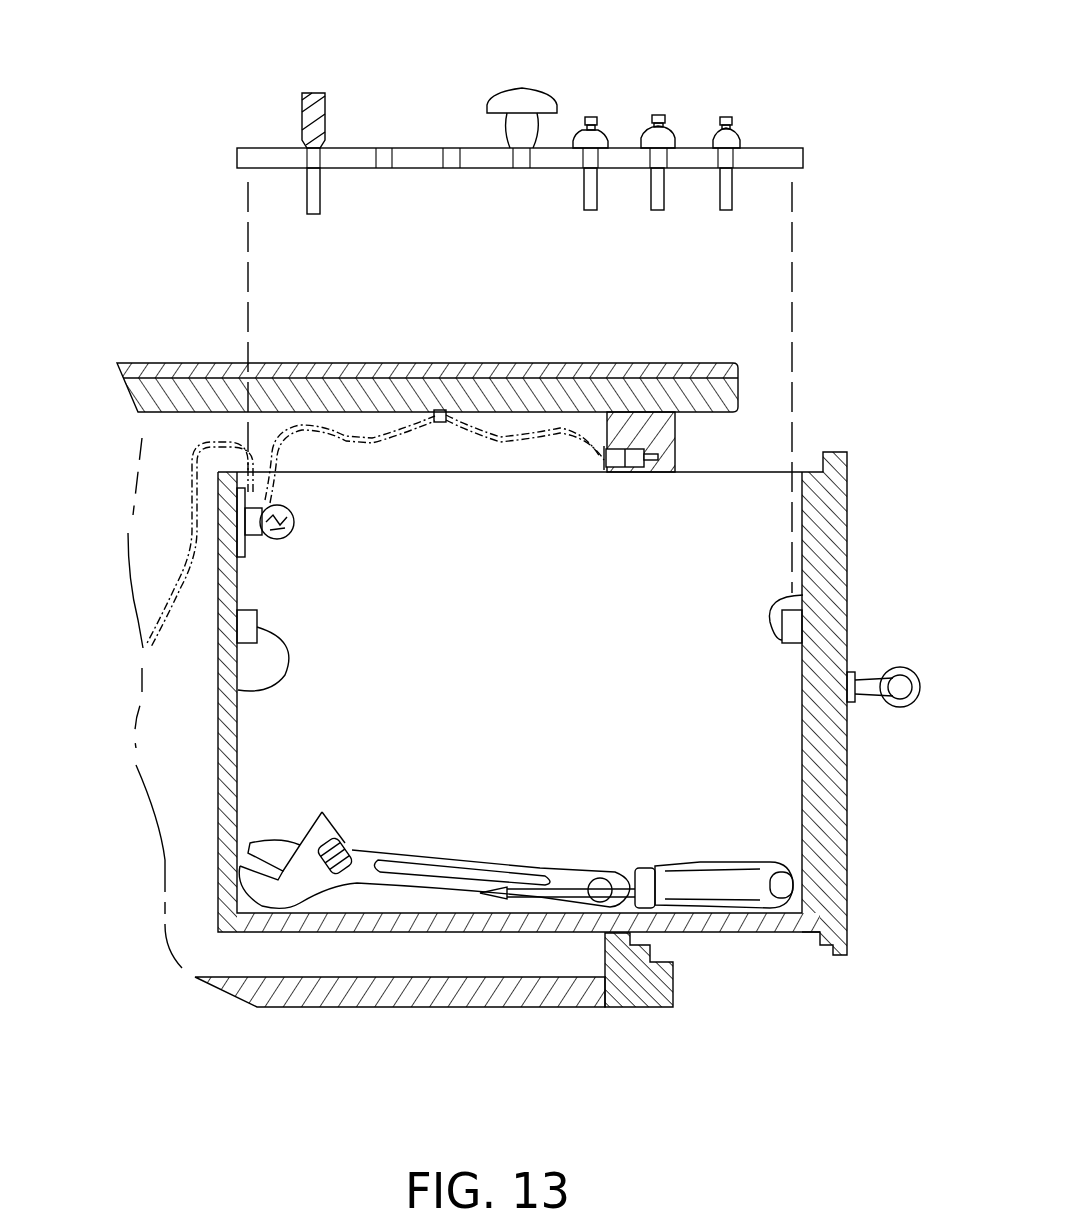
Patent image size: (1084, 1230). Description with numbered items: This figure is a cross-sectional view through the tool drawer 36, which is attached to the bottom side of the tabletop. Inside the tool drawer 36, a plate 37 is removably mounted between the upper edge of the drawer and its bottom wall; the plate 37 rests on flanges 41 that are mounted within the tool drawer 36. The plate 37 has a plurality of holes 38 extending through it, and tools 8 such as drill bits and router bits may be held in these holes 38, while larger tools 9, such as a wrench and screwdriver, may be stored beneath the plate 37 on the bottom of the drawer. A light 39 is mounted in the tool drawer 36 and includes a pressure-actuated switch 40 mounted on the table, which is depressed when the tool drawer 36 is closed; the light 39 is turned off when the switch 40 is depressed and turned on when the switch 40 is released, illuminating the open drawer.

The tools 8 is at (304, 92).
The larger tools 9 is at (340, 870).
The tool drawer 36 is at (838, 953).
The plate 37 is at (782, 158).
The holes 38 is at (382, 160).
The light 39 is at (275, 540).
The pressure-actuated switch 40 is at (662, 442).
The flanges 41 is at (240, 690).